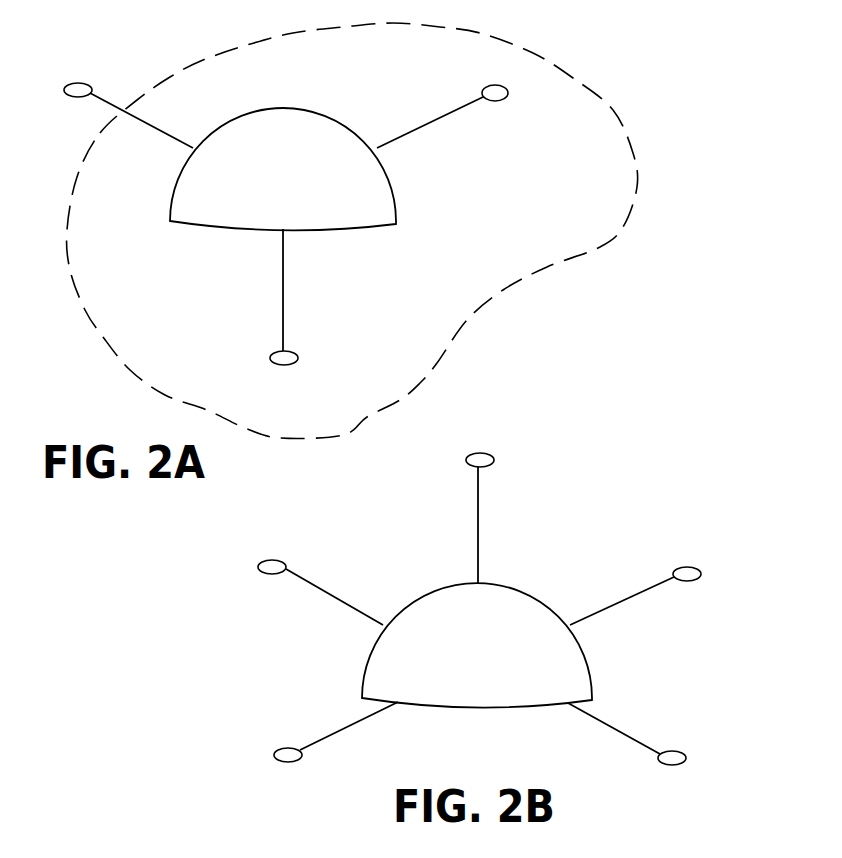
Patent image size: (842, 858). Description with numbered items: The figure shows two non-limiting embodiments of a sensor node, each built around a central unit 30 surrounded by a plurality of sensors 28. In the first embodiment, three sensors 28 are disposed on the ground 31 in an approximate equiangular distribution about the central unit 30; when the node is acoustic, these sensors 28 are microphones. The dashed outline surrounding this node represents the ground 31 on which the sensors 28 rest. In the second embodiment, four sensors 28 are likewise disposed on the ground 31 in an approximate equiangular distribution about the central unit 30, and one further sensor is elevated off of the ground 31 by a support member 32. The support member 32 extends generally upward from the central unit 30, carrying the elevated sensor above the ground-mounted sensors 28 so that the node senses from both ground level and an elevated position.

In FIG. 2A, the sensors 28 is at (80, 84).
In FIG. 2B, the sensors 28 is at (272, 562).
In FIG. 2A, the central unit 30 is at (295, 186).
In FIG. 2B, the central unit 30 is at (489, 662).
In FIG. 2A, the ground 31 is at (527, 47).
In FIG. 2B, the support member 32 is at (480, 520).